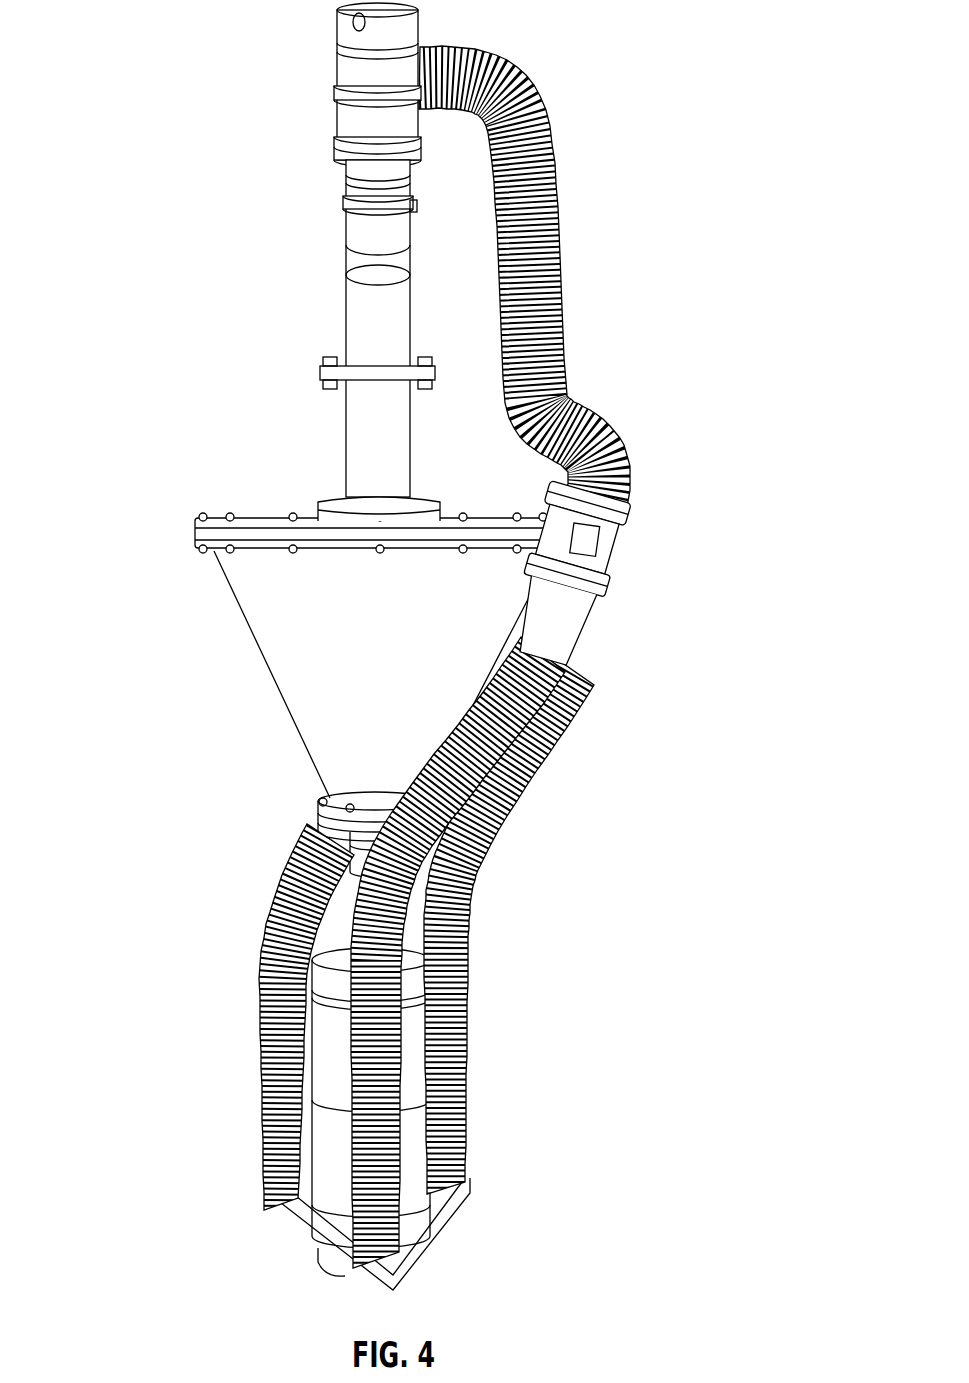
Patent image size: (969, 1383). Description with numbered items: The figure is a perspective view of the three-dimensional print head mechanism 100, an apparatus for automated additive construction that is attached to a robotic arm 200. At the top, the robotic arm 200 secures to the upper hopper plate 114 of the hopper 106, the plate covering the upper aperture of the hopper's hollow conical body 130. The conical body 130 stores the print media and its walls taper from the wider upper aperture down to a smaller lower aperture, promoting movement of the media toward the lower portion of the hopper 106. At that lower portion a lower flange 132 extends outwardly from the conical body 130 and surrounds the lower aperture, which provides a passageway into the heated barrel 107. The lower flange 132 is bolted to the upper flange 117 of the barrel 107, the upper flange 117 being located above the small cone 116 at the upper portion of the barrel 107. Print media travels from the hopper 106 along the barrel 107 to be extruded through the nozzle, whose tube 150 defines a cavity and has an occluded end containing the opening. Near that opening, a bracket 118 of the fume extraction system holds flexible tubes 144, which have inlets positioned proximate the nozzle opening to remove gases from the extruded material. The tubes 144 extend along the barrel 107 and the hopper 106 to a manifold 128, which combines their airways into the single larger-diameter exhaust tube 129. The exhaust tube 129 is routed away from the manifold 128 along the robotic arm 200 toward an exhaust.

The 3D print head mechanism 100 is at (420, 825).
The hopper 106 is at (359, 674).
The heated barrel 107 is at (280, 946).
The upper hopper plate 114 is at (194, 554).
The small cone 116 is at (313, 840).
The upper flange 117 is at (516, 755).
The bracket 118 is at (275, 1209).
The manifold 128 is at (656, 565).
The exhaust tube 129 is at (655, 480).
The hollow conical body 130 is at (241, 614).
The lower flange 132 is at (317, 795).
The flexible tubes 144 is at (284, 886).
The tube 150 is at (588, 340).
The robotic arm 200 is at (178, 296).